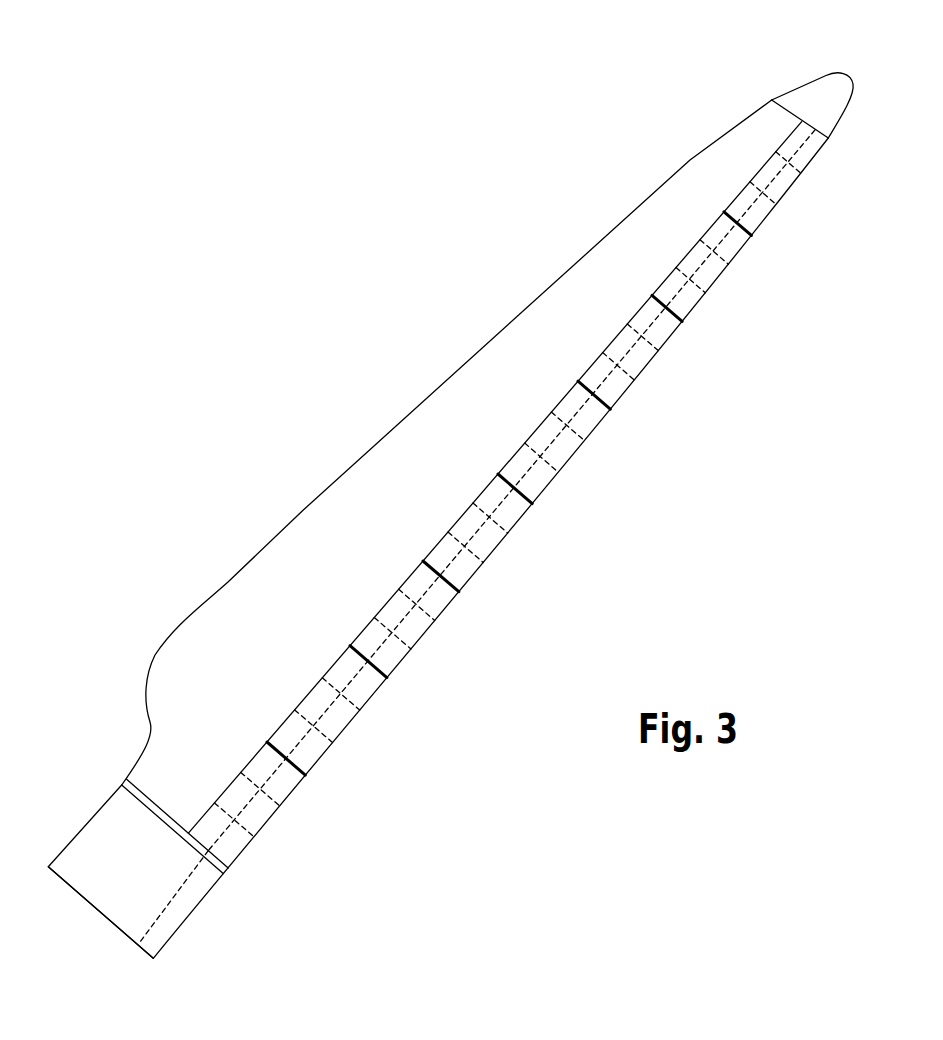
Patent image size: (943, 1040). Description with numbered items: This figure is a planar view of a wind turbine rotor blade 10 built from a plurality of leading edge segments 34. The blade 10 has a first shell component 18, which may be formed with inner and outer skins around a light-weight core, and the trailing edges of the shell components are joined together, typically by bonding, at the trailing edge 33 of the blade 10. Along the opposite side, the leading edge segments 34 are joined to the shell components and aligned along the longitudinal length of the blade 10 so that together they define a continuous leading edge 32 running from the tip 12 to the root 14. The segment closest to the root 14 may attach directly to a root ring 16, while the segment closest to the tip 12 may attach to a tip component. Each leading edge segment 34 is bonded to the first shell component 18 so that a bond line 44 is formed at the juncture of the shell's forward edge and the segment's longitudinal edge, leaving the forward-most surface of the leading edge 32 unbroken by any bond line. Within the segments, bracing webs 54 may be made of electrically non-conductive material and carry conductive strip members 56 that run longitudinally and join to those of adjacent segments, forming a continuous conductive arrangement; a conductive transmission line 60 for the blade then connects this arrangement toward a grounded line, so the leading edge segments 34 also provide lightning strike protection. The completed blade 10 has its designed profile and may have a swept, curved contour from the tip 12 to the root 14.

The wind turbine rotor blade 10 is at (437, 364).
The tip 12 is at (820, 92).
The root 14 is at (50, 829).
The root ring 16 is at (105, 900).
The first shell component 18 is at (313, 543).
The leading edge 32 is at (574, 468).
The trailing edge 33 is at (611, 222).
The leading edge segments 34 is at (333, 738).
The bond line 44 is at (271, 638).
The bracing webs 54 is at (488, 530).
The conductive strip members 56 is at (407, 630).
The conductive transmission line 60 is at (160, 917).